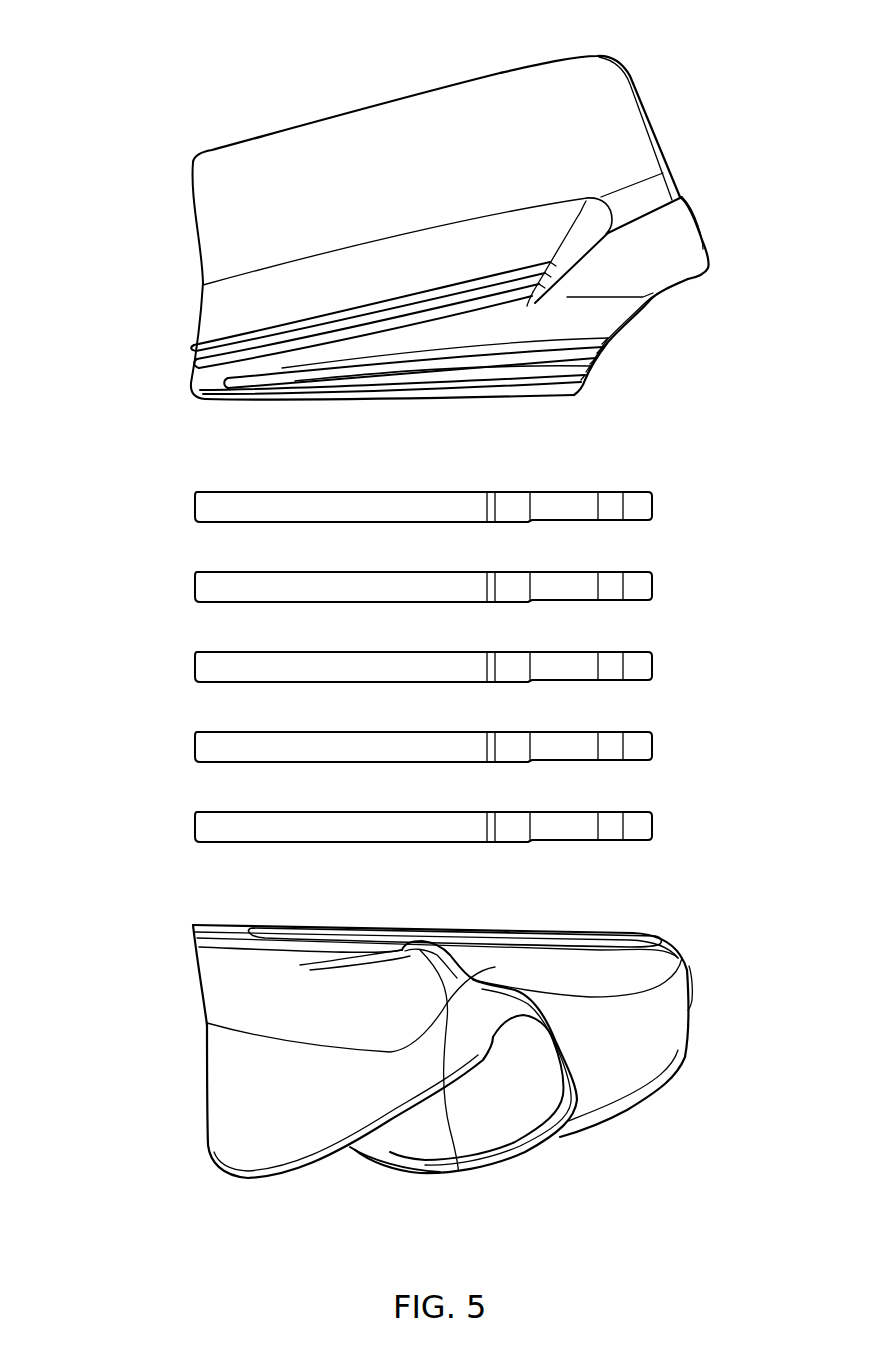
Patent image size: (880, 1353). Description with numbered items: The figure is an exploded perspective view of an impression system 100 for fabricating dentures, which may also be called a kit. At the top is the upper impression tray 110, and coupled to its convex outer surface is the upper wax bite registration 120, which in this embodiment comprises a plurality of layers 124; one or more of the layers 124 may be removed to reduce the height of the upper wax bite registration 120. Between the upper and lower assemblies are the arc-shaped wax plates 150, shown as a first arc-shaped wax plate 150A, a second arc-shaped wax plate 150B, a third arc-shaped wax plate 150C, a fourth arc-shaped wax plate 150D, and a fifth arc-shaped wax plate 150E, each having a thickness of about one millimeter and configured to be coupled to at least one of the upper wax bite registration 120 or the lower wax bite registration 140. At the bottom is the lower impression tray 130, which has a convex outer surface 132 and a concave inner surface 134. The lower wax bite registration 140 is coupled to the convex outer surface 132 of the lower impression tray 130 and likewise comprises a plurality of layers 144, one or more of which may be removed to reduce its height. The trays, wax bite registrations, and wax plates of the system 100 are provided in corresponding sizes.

The impression system 100 is at (717, 49).
The upper impression tray 110 is at (196, 193).
The upper wax bite registration 120 is at (200, 318).
The plurality of layers 124 is at (203, 355).
The arc-shaped wax plates 150 is at (357, 667).
The first arc-shaped wax plate 150A is at (195, 507).
The second arc-shaped wax plate 150B is at (195, 587).
The third arc-shaped wax plate 150C is at (195, 667).
The fourth arc-shaped wax plate 150D is at (195, 747).
The fifth arc-shaped wax plate 150E is at (195, 827).
The plurality of layers 144 is at (193, 933).
The lower wax bite registration 140 is at (207, 983).
The lower impression tray 130 is at (205, 1107).
The convex outer surface 132 is at (458, 1168).
The concave inner surface 134 is at (413, 1140).